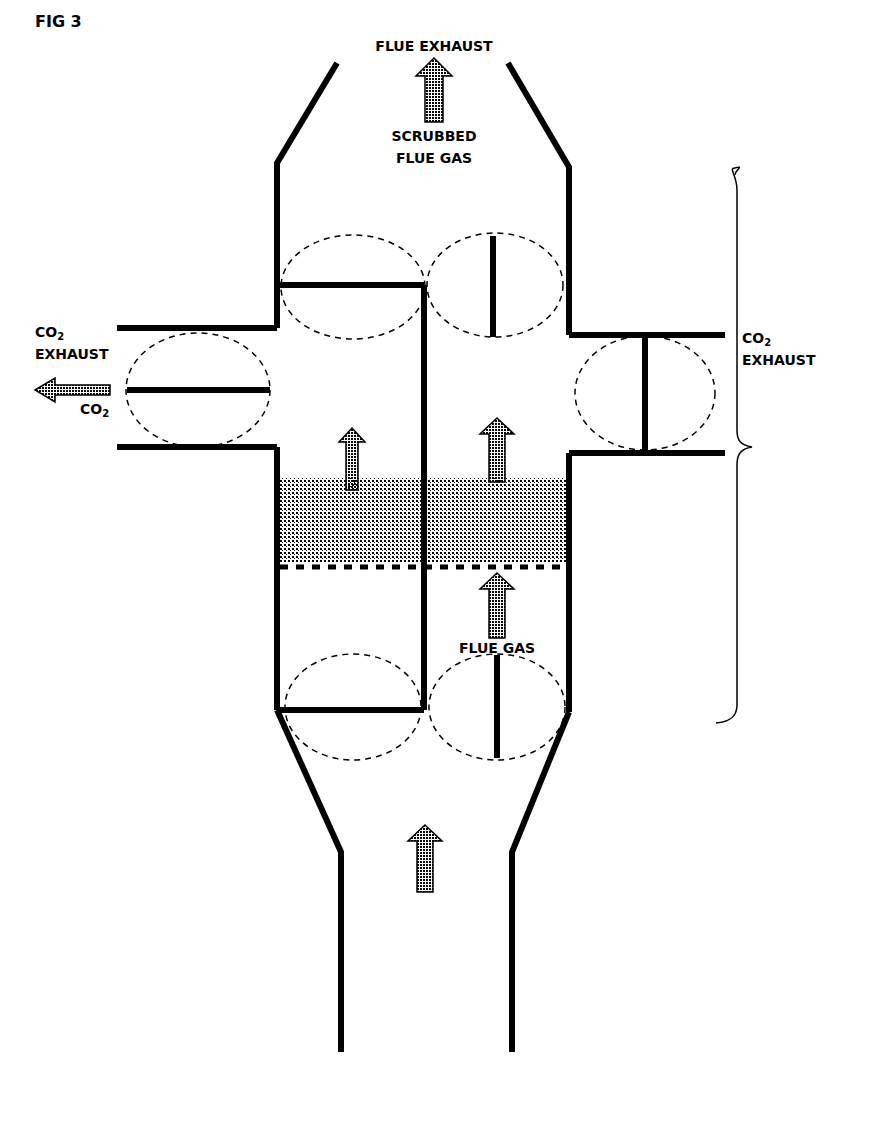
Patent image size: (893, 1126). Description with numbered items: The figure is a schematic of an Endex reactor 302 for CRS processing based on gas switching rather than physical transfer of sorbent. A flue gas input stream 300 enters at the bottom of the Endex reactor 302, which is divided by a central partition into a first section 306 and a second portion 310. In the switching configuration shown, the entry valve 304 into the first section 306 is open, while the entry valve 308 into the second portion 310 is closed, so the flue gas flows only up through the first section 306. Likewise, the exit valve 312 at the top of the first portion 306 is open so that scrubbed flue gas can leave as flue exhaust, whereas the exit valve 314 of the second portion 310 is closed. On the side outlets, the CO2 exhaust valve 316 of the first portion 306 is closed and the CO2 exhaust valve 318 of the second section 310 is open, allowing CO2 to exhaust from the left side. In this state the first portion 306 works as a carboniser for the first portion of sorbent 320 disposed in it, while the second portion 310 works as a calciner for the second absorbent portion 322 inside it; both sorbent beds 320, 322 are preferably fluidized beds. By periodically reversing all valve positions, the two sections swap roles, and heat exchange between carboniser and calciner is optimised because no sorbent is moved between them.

The flue gas input stream 300 is at (458, 862).
The Endex reactor 302 is at (457, 393).
The entry valve 304 is at (506, 739).
The first section 306 is at (574, 533).
The entry valve 308 is at (308, 718).
The second portion 310 is at (272, 602).
The exit valve 312 is at (502, 246).
The exit valve 314 is at (306, 276).
The CO2 exhaust valve 316 is at (658, 354).
The CO2 exhaust valve 318 is at (200, 397).
The sorbent 320 is at (552, 497).
The second absorbent portion 322 is at (303, 510).